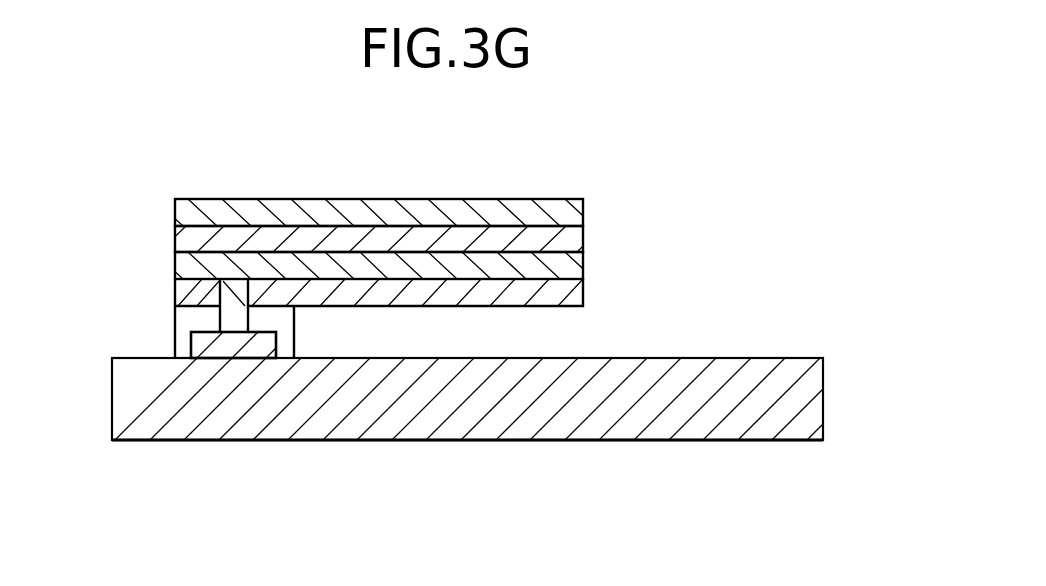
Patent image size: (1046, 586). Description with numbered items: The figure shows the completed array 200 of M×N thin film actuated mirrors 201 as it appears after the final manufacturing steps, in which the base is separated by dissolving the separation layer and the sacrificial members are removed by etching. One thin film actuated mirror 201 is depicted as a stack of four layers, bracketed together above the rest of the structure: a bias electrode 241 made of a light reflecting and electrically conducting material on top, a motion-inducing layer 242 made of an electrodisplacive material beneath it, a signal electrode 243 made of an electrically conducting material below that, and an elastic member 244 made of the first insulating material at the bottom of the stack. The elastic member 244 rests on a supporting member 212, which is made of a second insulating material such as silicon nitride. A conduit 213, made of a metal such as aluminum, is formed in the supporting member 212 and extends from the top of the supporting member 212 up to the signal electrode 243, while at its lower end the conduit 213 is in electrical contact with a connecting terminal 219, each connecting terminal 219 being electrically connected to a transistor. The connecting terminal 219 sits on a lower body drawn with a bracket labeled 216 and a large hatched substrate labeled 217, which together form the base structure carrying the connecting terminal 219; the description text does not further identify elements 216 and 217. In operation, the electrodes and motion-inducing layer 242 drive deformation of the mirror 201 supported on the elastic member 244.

The array of M×N thin film actuated mirrors 200 is at (665, 132).
The thin film actuated mirror 201 is at (581, 182).
The bias electrode 241 is at (197, 210).
The motion-inducing layer 242 is at (187, 238).
The signal electrode 243 is at (187, 267).
The elastic member 244 is at (180, 293).
The conduit 213 is at (232, 313).
The substrate assembly 216 is at (82, 332).
The supporting member 212 is at (285, 335).
The connecting terminal 219 is at (208, 347).
The substrate 217 is at (405, 415).